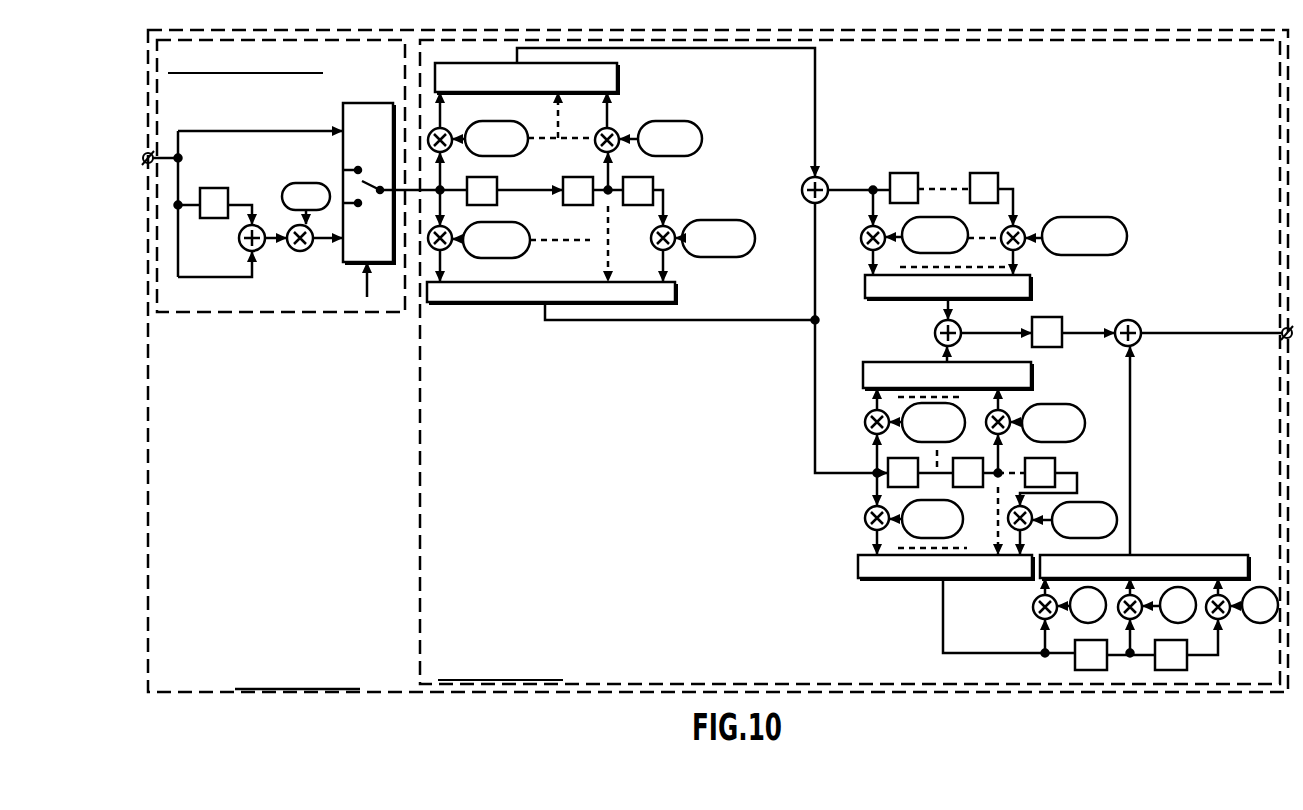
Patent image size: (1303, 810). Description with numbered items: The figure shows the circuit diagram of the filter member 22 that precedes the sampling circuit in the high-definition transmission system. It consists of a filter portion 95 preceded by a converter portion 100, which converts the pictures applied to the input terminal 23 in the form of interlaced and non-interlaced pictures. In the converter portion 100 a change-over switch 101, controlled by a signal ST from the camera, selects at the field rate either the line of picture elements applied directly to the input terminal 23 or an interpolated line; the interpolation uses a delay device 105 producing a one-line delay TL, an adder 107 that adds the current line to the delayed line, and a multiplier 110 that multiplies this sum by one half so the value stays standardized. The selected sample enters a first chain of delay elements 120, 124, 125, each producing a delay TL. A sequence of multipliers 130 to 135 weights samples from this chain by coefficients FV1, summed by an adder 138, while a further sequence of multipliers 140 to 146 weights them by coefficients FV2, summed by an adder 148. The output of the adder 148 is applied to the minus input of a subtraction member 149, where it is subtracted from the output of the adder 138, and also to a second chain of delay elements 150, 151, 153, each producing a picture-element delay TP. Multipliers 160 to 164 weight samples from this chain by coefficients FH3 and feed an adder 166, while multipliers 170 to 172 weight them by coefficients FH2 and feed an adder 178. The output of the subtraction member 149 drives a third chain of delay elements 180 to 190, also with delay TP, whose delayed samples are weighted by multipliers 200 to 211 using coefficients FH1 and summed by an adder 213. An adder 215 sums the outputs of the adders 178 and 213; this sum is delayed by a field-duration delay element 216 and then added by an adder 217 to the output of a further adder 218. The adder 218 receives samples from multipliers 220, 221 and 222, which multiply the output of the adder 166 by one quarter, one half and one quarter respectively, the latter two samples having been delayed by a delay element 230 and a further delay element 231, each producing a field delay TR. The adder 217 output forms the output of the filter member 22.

The filter member 22 is at (212, 660).
The input terminal 23 is at (152, 153).
The filter portion 95 is at (422, 490).
The converter portion 100 is at (245, 312).
The change-over switch 101 is at (378, 112).
The delay device 105 is at (231, 160).
The adder 107 is at (262, 248).
The multiplier 110 is at (311, 247).
The delay element 120 is at (497, 188).
The delay element 124 is at (578, 206).
The delay element 125 is at (660, 167).
The multiplier 130 is at (449, 129).
The multiplier 135 is at (614, 130).
The adder 138 is at (617, 77).
The multiplier 140 is at (448, 249).
The multiplier 146 is at (672, 247).
The adder 148 is at (497, 299).
The subtraction member 149 is at (802, 190).
The delay element 150 is at (870, 461).
The delay element 151 is at (955, 487).
The delay element 153 is at (1057, 460).
The multiplier 160 is at (865, 521).
The multiplier 164 is at (1010, 515).
The adder 166 is at (882, 567).
The multiplier 170 is at (864, 423).
The multiplier 172 is at (1011, 409).
The adder 178 is at (1031, 378).
The delay element 180 is at (906, 173).
The delay element 190 is at (980, 173).
The multiplier 200 is at (860, 237).
The multiplier 211 is at (1021, 226).
The adder 213 is at (1031, 290).
The adder 215 is at (970, 324).
The delay element 216 is at (1050, 317).
The adder 217 is at (1136, 320).
The adder 218 is at (1158, 555).
The multiplier 220 is at (1033, 608).
The multiplier 221 is at (1094, 618).
The multiplier 222 is at (1225, 618).
The delay element 230 is at (1075, 661).
The delay element 231 is at (1189, 661).